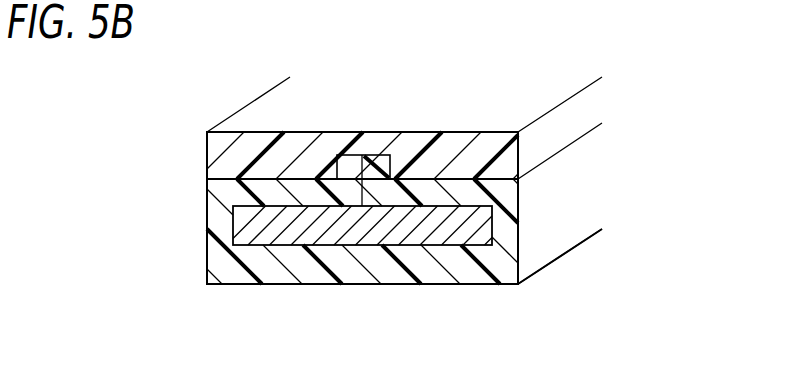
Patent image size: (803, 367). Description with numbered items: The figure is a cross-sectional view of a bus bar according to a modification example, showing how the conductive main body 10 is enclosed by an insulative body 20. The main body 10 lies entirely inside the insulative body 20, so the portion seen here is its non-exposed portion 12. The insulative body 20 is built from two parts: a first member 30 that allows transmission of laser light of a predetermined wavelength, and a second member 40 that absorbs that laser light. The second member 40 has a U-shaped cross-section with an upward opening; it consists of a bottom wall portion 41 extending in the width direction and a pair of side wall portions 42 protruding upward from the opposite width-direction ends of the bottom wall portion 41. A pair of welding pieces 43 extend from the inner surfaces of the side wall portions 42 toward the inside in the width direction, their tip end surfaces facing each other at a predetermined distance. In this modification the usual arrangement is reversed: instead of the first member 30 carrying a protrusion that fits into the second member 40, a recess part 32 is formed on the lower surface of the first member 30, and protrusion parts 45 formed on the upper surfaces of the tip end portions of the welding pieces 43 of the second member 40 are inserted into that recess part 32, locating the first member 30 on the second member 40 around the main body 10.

The main body 10 is at (362, 278).
The non-exposed portion 12 is at (325, 240).
The insulative body 20 is at (722, 65).
The first member 30 is at (581, 108).
The recess part 32 is at (348, 170).
The second member 40 is at (427, 259).
The bottom wall portion 41 is at (388, 273).
The side wall portions 42 is at (207, 218).
The welding pieces 43 is at (265, 198).
The protrusion parts 45 is at (379, 156).